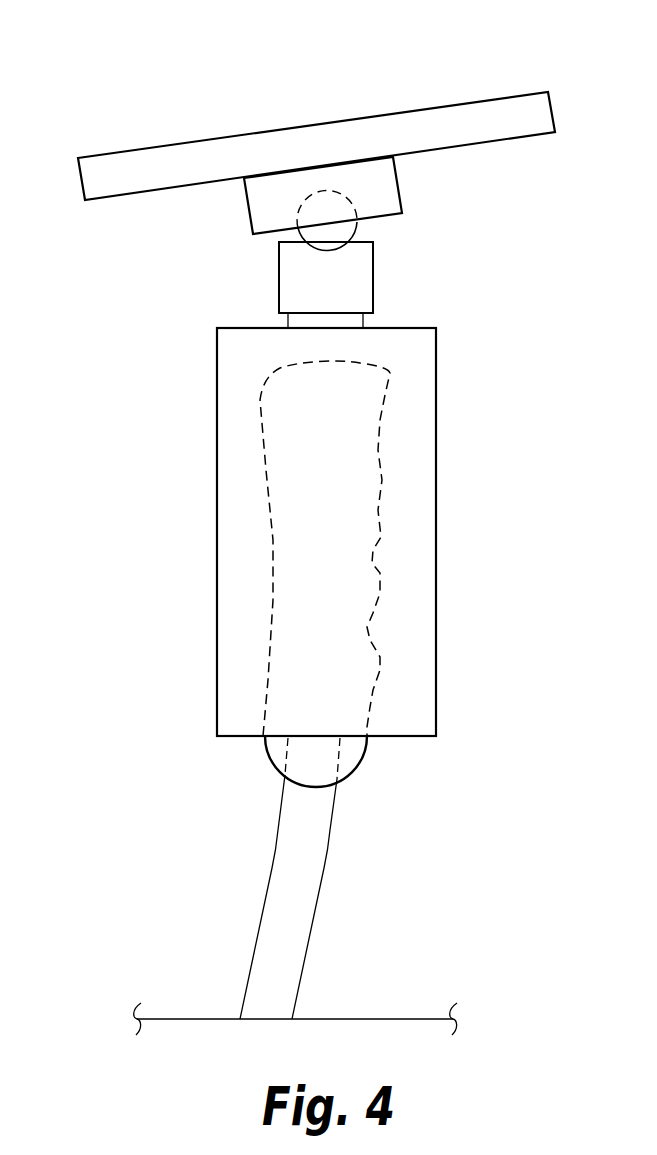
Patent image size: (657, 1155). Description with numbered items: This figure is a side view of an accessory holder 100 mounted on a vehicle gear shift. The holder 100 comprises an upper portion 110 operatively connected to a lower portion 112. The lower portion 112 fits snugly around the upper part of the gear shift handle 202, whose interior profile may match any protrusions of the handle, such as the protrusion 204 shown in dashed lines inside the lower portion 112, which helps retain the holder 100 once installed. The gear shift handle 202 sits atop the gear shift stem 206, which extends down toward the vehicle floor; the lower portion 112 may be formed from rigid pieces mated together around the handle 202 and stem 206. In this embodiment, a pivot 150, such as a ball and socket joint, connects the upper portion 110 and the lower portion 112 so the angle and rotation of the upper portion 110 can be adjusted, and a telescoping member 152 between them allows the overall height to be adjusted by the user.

The accessory holder 100 is at (171, 37).
The upper portion 110 is at (412, 108).
The lower portion 112 is at (436, 622).
The pivot 150 is at (343, 188).
The telescoping member 152 is at (376, 277).
The gear shift handle 202 is at (362, 756).
The protrusion 204 is at (360, 363).
The gear shift stem 206 is at (287, 752).